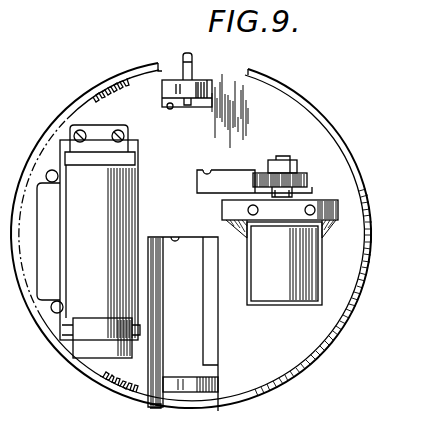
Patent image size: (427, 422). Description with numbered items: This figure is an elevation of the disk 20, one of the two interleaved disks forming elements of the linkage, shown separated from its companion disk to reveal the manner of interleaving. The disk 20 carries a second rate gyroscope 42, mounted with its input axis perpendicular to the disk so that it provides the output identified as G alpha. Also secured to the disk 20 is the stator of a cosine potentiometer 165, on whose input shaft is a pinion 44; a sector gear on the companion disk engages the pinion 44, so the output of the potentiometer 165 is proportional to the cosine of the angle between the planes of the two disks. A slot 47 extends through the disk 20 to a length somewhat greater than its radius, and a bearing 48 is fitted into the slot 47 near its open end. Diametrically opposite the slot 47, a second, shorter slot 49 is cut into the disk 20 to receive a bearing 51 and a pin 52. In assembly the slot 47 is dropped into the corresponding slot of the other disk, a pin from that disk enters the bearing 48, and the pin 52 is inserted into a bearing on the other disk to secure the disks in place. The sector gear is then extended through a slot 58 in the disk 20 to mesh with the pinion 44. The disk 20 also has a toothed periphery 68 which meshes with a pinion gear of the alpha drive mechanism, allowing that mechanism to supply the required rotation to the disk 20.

The disk 20 is at (276, 346).
The second rate gyroscope 42 is at (92, 244).
The pinion 44 is at (305, 180).
The slot 47 is at (174, 236).
The bearing 48 is at (198, 393).
The second slot 49 is at (172, 108).
The bearing 51 is at (207, 80).
The pin 52 is at (182, 63).
The slot 58 is at (208, 170).
The toothed periphery 68 is at (108, 396).
The cosine potentiometer 165 is at (282, 269).